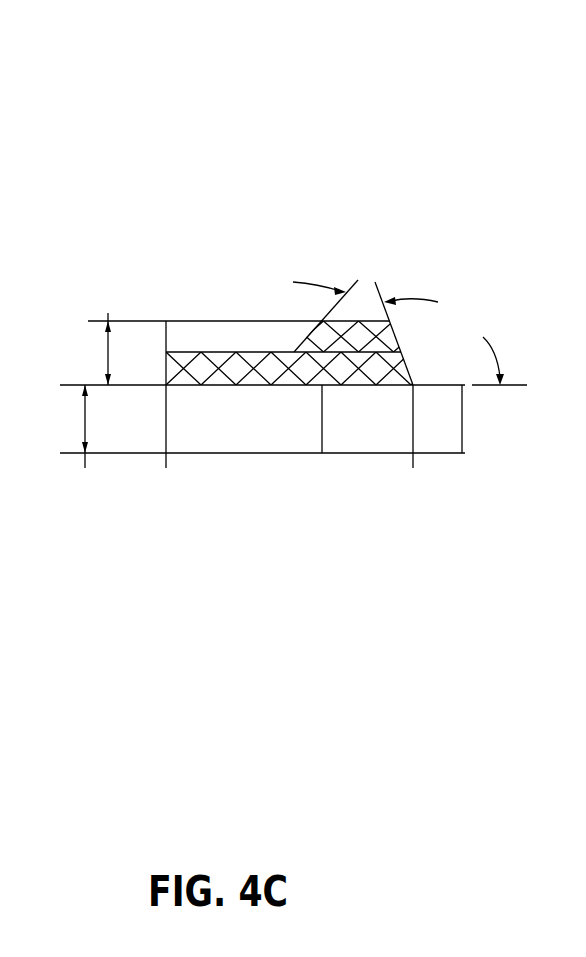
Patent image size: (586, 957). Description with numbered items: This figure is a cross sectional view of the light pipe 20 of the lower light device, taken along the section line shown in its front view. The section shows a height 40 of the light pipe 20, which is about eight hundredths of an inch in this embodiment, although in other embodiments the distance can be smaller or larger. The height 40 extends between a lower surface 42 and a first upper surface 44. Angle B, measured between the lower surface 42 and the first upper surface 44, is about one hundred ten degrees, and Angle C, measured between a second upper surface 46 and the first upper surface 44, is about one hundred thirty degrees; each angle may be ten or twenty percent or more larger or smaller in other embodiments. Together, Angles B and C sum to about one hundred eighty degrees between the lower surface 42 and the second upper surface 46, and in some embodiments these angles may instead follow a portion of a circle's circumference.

The light pipe 20 is at (263, 120).
The height 40 is at (108, 350).
The lower surface 42 is at (199, 385).
The first upper surface 44 is at (357, 323).
The second upper surface 46 is at (212, 350).